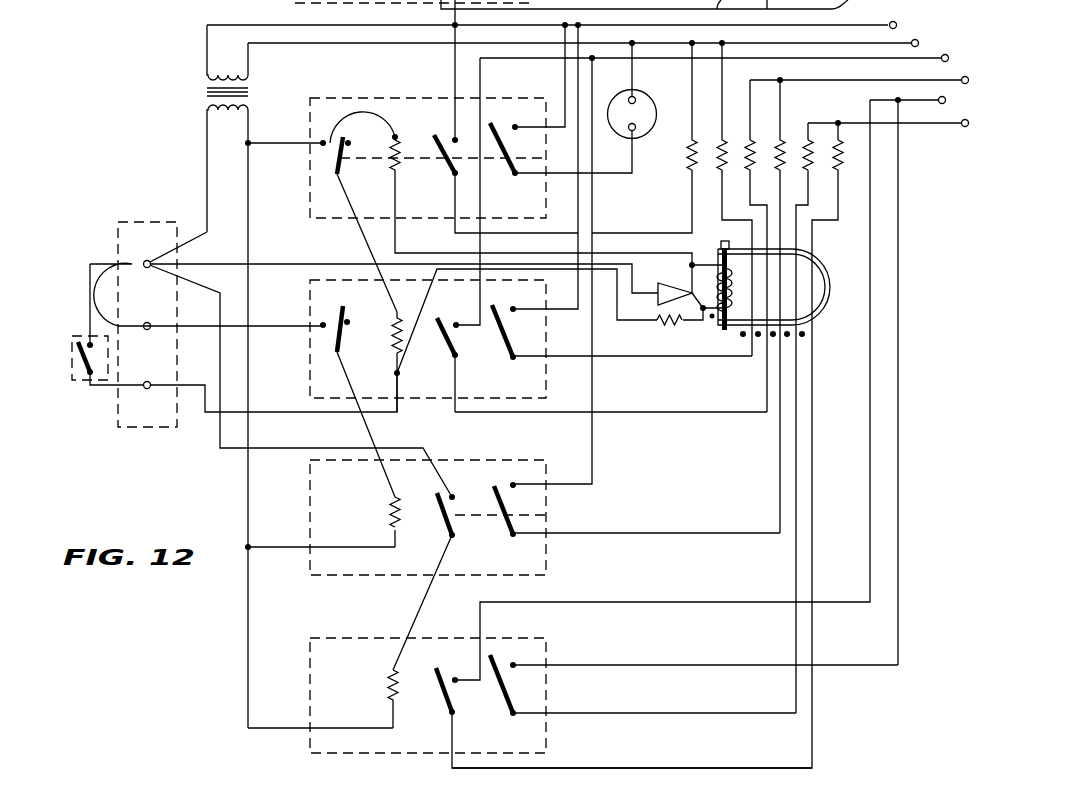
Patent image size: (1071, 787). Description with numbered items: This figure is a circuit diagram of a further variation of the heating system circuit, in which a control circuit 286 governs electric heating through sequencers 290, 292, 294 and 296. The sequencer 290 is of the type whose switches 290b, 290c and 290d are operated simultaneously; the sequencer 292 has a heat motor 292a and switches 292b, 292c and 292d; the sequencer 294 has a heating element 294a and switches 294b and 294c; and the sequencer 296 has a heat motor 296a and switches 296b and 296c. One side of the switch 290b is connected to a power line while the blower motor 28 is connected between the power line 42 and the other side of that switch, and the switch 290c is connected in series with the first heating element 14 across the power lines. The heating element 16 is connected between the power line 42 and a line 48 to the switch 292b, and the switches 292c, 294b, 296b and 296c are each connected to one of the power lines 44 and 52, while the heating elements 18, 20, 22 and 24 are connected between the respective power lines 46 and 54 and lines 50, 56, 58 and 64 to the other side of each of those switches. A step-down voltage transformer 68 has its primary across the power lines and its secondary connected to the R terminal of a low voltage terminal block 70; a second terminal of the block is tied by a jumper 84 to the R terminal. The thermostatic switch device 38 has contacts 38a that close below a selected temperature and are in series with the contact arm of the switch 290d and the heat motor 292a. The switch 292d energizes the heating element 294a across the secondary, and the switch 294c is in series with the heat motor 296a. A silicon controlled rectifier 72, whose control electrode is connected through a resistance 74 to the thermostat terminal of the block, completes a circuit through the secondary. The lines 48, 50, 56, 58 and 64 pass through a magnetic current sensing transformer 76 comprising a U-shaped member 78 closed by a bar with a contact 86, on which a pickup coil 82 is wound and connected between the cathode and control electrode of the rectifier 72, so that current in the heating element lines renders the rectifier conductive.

The control circuit 286 is at (490, 5).
The power line 42 is at (870, 20).
The power line 44 is at (925, 43).
The power line 46 is at (935, 80).
The power line 52 is at (880, 101).
The power line 54 is at (836, 122).
The step-down voltage transformer 68 is at (252, 90).
The low voltage terminal block 70 is at (136, 221).
The jumper 84 is at (98, 264).
The thermostatic switch device 38 is at (76, 382).
The thermostat contacts 38a is at (97, 368).
The sequencer 290 is at (378, 98).
The switch 290b is at (518, 147).
The switch 290c is at (445, 131).
The switch 290d is at (333, 136).
The electrical motor 28 is at (650, 104).
The electrical resistance heating element 14 is at (690, 152).
The electrical resistance heating element 16 is at (720, 165).
The electrical resistance heating element 18 is at (748, 155).
The electrical resistance heating element 20 is at (782, 160).
The electrical resistance heating element 22 is at (810, 158).
The electrical resistance heating element 24 is at (840, 160).
The silicon controlled rectifier 72 is at (657, 283).
The resistance 74 is at (658, 321).
The magnetic current sensing transformer 76 is at (832, 287).
The U-shaped member 78 is at (820, 326).
The pickup coil 82 is at (735, 322).
The contact 86 is at (721, 243).
The line 48 is at (677, 357).
The line 50 is at (643, 414).
The line 56 is at (672, 533).
The line 58 is at (672, 712).
The line 64 is at (672, 770).
The sequencer 292 is at (428, 398).
The heat motor 292a is at (385, 325).
The switch 292b is at (520, 327).
The switch 292c is at (460, 333).
The switch 292d is at (328, 333).
The sequencer 294 is at (380, 577).
The heating element 294a is at (383, 513).
The switch 294b is at (512, 500).
The switch 294c is at (458, 527).
The sequencer 296 is at (300, 745).
The heat motor 296a is at (383, 690).
The switch 296b is at (512, 688).
The switch 296c is at (458, 700).